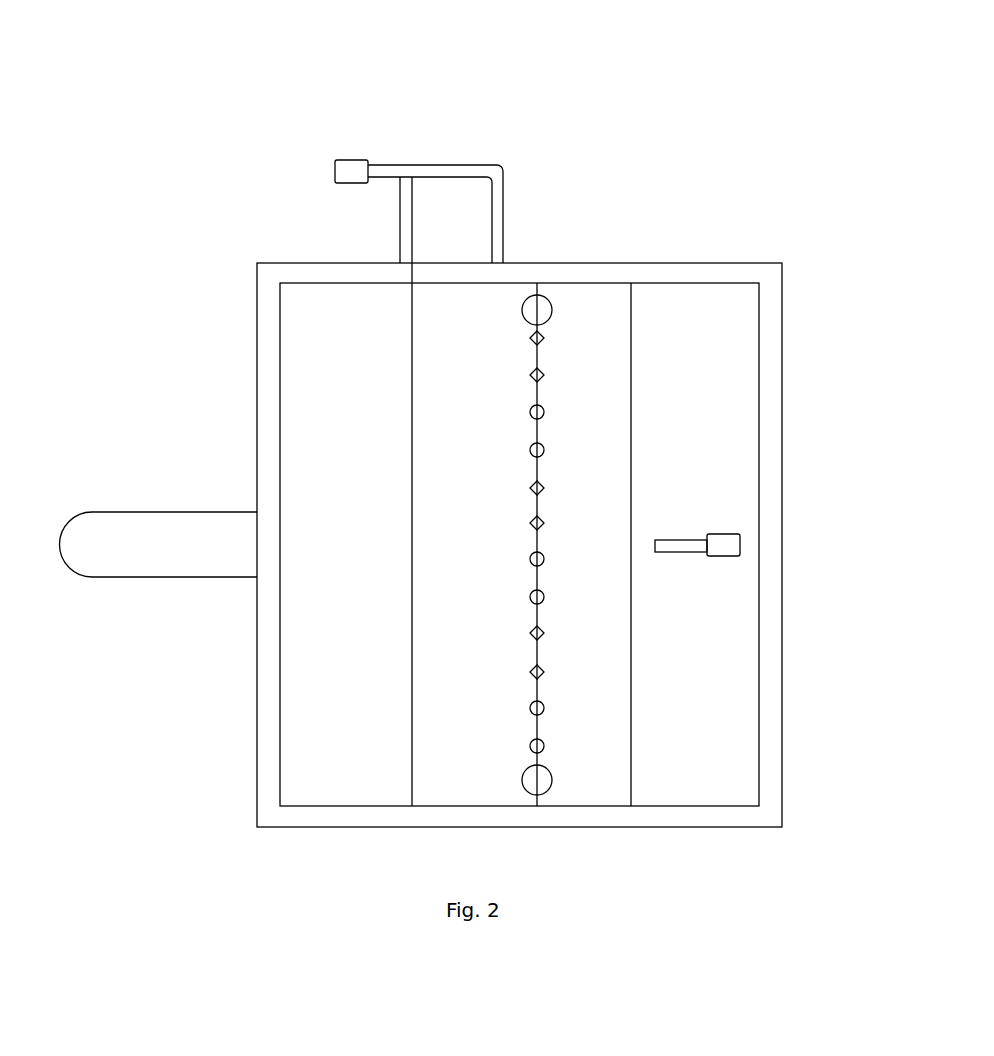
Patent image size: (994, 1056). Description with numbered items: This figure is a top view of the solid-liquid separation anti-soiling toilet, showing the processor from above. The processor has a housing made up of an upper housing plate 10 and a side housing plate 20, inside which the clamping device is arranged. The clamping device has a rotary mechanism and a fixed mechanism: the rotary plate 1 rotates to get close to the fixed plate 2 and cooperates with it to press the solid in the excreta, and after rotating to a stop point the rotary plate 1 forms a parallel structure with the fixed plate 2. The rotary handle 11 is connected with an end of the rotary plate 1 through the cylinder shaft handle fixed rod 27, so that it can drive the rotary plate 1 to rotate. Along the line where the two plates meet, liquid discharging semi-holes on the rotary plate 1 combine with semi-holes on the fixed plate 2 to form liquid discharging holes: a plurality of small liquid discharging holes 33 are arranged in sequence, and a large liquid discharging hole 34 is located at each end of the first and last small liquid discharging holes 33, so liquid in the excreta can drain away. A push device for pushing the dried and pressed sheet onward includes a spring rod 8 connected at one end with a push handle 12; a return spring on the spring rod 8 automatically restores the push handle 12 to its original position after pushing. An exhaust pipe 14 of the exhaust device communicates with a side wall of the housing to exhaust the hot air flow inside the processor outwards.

The rotary plate 1 is at (455, 650).
The fixed plate 2 is at (593, 382).
The spring rod 8 is at (690, 540).
The upper housing plate 10 is at (340, 492).
The rotary handle 11 is at (356, 162).
The push handle 12 is at (742, 535).
The exhaust pipe 14 is at (205, 542).
The side housing plate 20 is at (275, 385).
The cylinder shaft handle fixed rod 27 is at (455, 172).
The small liquid discharging hole 33 is at (545, 707).
The large liquid discharging hole 34 is at (545, 780).